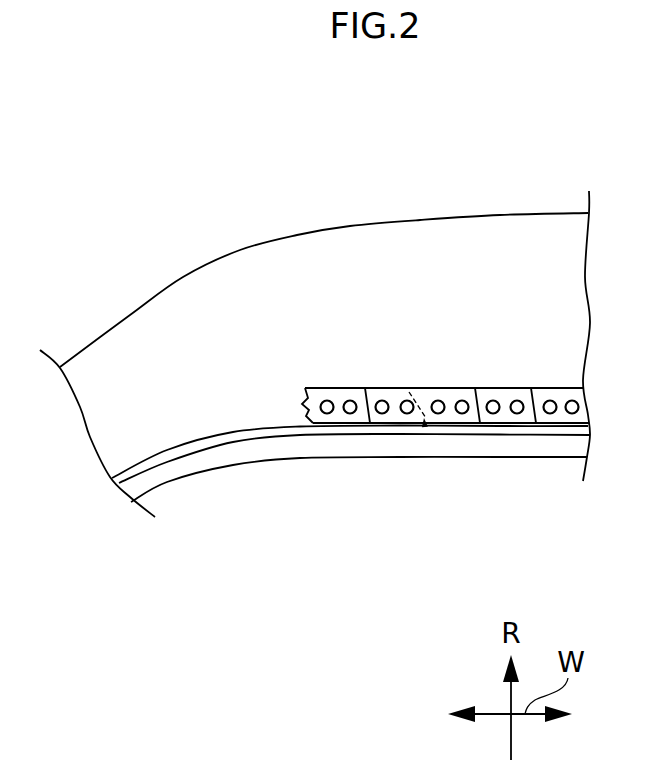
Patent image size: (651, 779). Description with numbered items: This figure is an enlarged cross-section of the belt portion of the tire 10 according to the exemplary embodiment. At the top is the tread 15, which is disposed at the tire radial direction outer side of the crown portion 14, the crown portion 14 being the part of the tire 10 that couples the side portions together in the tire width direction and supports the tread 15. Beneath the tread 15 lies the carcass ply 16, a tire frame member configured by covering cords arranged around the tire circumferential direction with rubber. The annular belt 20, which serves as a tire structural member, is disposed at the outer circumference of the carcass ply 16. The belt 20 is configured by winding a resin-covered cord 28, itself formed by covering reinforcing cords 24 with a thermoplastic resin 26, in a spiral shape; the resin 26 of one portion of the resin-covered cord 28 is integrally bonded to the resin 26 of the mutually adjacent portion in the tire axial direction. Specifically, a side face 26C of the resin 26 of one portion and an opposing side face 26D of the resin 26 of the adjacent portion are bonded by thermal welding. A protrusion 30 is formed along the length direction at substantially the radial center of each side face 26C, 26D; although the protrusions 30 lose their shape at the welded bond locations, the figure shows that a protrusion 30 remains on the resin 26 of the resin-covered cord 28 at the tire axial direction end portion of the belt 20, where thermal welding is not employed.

The tire 10 is at (211, 222).
The crown portion 14 is at (523, 458).
The tread 15 is at (545, 213).
The carcass ply 16 is at (140, 457).
The belt 20 is at (474, 318).
The reinforcing cords 24 is at (351, 398).
The resin 26 is at (315, 383).
The side face 26C is at (408, 386).
The side face 26D is at (304, 392).
The resin-covered cord 28 is at (435, 352).
The protrusion 30 is at (302, 405).